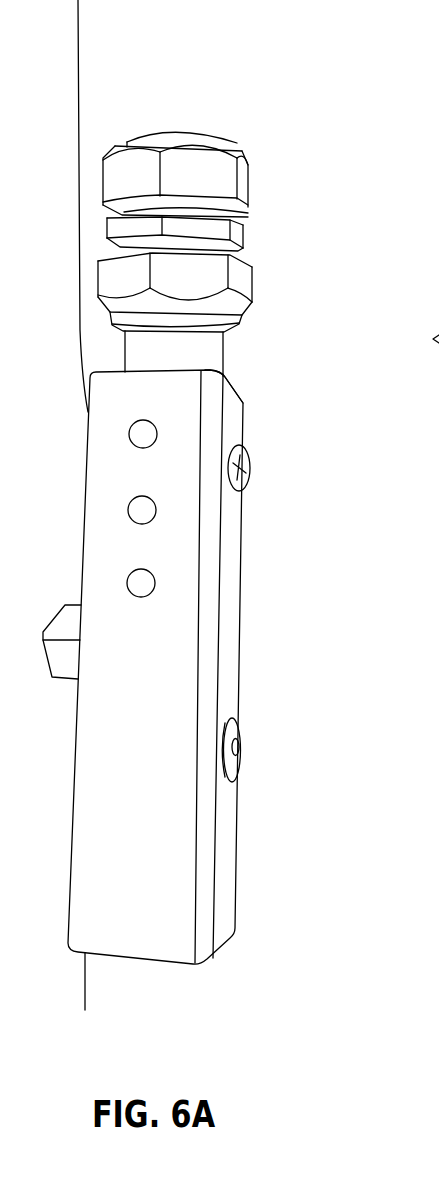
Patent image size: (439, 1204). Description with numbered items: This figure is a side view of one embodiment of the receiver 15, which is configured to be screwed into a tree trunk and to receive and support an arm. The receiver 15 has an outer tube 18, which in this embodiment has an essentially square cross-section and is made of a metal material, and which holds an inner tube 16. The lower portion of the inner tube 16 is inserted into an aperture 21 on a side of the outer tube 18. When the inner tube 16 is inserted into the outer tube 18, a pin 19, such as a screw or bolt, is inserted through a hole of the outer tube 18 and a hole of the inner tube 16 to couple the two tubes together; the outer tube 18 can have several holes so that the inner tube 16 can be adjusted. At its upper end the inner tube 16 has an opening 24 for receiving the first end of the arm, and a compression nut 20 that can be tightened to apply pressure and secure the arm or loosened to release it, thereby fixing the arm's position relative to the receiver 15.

The receiver 15 is at (265, 520).
The inner tube 16 is at (283, 217).
The outer tube 18 is at (230, 590).
The pin 19 is at (247, 466).
The compression nut 20 is at (120, 175).
The aperture 21 is at (240, 382).
The opening 24 is at (184, 124).